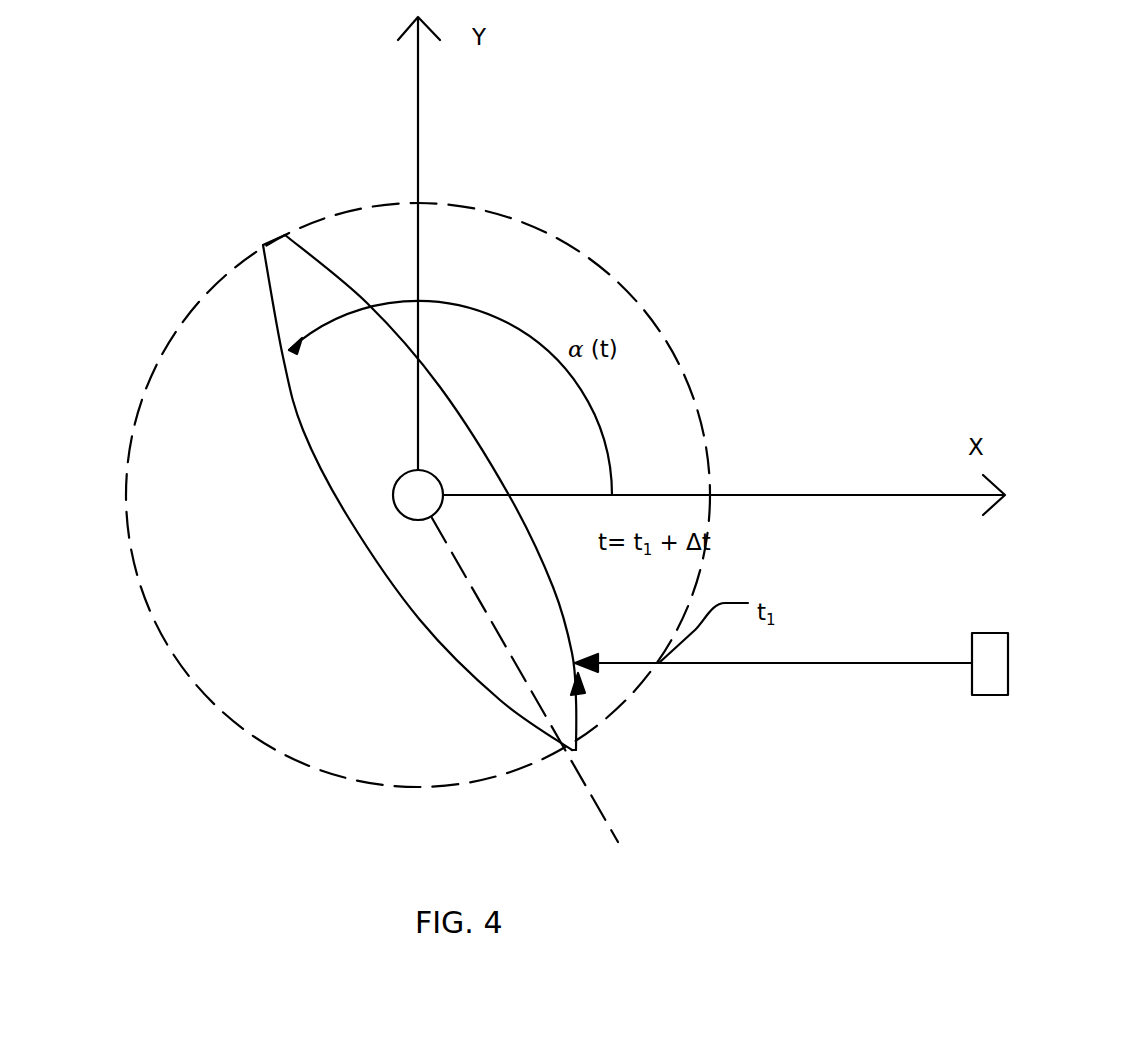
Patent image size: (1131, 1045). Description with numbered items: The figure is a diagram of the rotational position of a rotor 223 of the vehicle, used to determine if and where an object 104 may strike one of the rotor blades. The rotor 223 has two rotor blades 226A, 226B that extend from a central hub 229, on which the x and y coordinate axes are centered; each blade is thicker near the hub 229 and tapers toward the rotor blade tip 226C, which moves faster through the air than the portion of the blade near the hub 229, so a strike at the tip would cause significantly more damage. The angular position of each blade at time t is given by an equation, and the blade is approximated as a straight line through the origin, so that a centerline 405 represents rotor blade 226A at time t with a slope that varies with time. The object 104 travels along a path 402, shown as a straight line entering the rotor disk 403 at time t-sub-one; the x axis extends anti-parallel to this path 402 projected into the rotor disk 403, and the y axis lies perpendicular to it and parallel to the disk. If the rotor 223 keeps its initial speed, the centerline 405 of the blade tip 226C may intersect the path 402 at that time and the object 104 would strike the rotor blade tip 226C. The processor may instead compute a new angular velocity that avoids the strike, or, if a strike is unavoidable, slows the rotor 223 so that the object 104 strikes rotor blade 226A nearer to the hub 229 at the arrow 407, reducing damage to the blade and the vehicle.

The rotor 223 is at (442, 416).
The rotor blade 226A is at (421, 619).
The rotor blade 226B is at (302, 428).
The rotor blade tip 226C is at (578, 752).
The hub 229 is at (397, 509).
The rotor disk 403 is at (183, 670).
The centerline 405 is at (585, 786).
The arrow 407 is at (580, 680).
The path 402 is at (738, 665).
The object 104 is at (1008, 658).